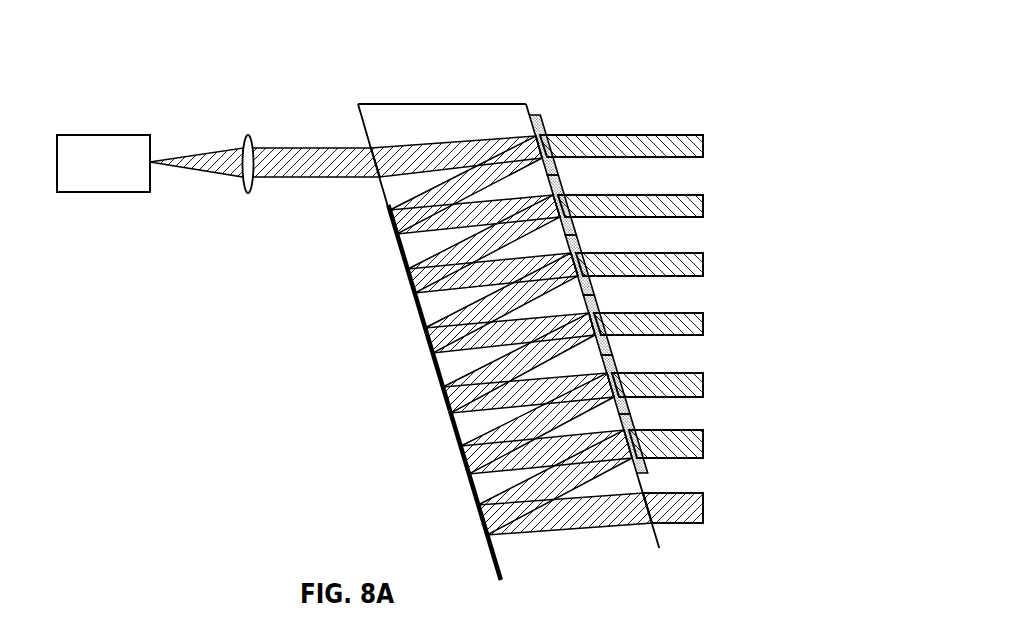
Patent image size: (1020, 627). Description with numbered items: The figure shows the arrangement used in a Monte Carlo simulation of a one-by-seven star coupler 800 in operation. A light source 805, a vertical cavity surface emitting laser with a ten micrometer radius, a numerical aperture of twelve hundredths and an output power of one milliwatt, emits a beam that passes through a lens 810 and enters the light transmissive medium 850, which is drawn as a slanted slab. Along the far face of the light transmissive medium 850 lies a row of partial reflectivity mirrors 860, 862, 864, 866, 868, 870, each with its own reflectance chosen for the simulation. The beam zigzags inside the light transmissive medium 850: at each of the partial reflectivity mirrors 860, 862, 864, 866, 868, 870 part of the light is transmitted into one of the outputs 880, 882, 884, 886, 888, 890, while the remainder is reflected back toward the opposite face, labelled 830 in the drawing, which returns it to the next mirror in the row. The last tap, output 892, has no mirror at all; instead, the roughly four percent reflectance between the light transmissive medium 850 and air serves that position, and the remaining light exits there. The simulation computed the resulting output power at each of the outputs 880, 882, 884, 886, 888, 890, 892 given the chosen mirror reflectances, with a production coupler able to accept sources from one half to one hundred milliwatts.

The star coupler 800 is at (165, 48).
The light source 805 is at (103, 134).
The lens 810 is at (246, 135).
The mirror 830 is at (437, 373).
The light transmissive medium 850 is at (440, 103).
The partial reflectivity mirror 860 is at (543, 126).
The partial reflectivity mirror 862 is at (562, 184).
The partial reflectivity mirror 864 is at (579, 245).
The partial reflectivity mirror 866 is at (597, 301).
The partial reflectivity mirror 868 is at (616, 362).
The partial reflectivity mirror 870 is at (632, 421).
The output 880 is at (703, 144).
The output 882 is at (703, 204).
The output 884 is at (703, 264).
The output 886 is at (703, 324).
The output 888 is at (703, 384).
The output 890 is at (703, 444).
The output 892 is at (703, 504).